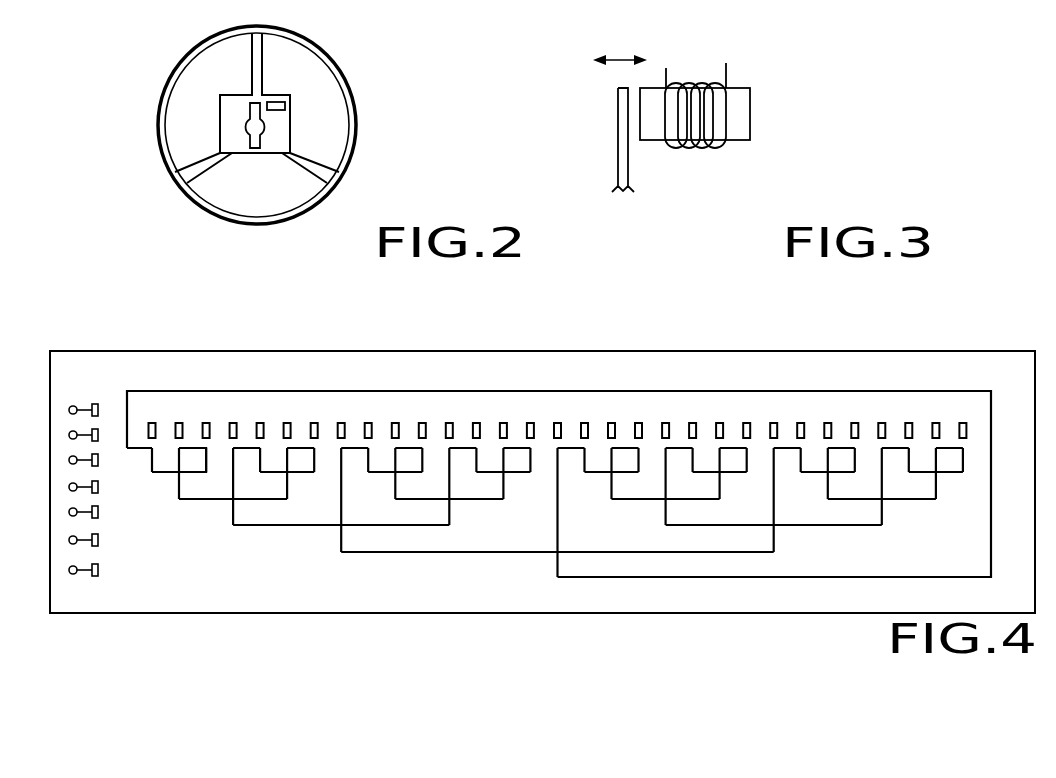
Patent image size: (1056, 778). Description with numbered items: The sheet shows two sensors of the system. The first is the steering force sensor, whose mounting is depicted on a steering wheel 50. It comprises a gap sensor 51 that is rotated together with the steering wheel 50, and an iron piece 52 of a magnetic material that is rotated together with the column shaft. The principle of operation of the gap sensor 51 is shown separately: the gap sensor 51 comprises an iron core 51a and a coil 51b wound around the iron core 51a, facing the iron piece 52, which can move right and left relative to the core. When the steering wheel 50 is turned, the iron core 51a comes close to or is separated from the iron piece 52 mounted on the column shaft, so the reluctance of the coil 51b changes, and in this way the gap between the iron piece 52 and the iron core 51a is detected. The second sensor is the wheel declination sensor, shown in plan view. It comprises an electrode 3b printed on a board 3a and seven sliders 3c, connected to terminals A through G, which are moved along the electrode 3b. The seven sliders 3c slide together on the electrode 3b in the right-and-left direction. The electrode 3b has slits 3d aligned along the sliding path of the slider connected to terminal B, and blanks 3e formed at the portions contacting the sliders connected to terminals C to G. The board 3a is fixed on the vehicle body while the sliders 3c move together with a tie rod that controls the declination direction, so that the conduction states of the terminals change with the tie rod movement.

In FIG. 2, the steering wheel 50 is at (343, 78).
In FIG. 2, the gap sensor 51 is at (286, 104).
In FIG. 2, the iron piece 52 is at (255, 150).
In FIG. 3, the iron piece 52 is at (618, 117).
In FIG. 3, the iron core 51a is at (745, 110).
In FIG. 3, the coil 51b is at (717, 144).
In FIG. 4, the board 3a is at (922, 365).
In FIG. 4, the electrode 3b is at (688, 412).
In FIG. 4, the sliders 3c is at (95, 578).
In FIG. 4, the slits 3d is at (157, 421).
In FIG. 4, the blanks 3e is at (193, 470).